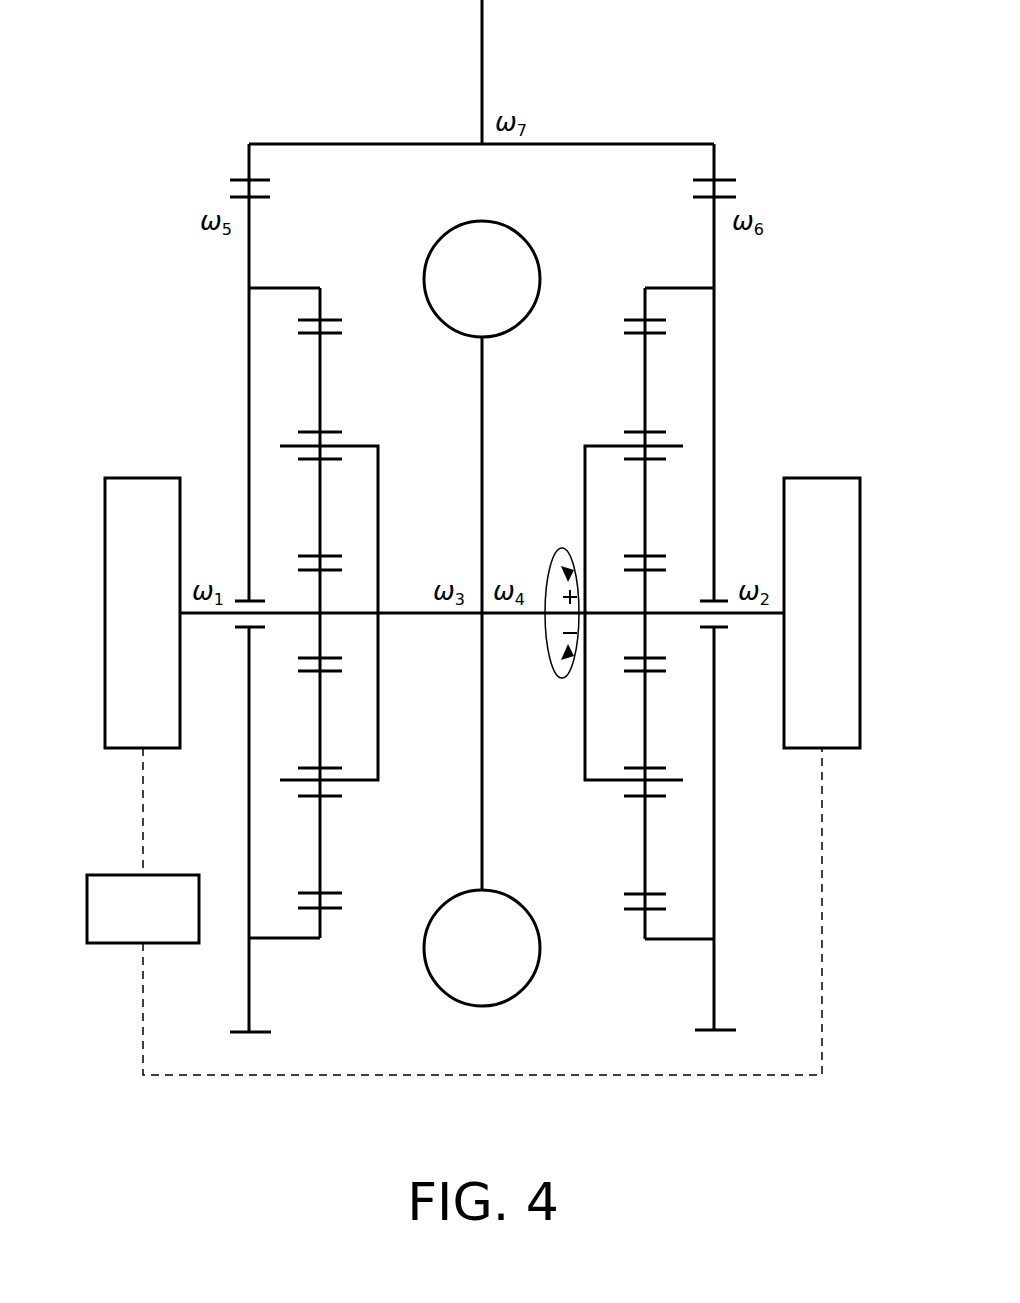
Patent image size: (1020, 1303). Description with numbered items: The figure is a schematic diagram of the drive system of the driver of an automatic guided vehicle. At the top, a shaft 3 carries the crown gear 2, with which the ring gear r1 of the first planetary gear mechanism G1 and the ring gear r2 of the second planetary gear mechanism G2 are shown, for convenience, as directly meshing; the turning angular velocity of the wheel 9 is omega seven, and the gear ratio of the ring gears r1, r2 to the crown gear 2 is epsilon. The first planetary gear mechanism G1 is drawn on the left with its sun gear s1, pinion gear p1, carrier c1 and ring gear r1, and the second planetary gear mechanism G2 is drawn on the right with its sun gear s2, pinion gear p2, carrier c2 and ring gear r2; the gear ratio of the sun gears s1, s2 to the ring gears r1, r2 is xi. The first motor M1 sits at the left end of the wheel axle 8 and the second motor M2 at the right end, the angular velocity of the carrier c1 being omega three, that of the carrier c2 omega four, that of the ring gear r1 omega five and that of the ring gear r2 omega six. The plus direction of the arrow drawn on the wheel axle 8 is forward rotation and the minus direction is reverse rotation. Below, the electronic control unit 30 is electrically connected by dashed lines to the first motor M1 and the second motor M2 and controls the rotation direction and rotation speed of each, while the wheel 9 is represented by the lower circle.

The crown gear 2 is at (640, 147).
The input shaft 3 is at (484, 52).
The wheel axle 8 is at (418, 617).
The wheel 9 is at (512, 892).
The electronic control unit (ECU) 30 is at (180, 873).
The first motor M1 is at (147, 477).
The second motor M2 is at (822, 477).
The first planetary gear mechanism G1 is at (405, 413).
The second planetary gear mechanism G2 is at (558, 413).
The ring gear r1 is at (248, 368).
The first pinion gear p1 is at (322, 375).
The carrier c1 is at (380, 497).
The sun gear s1 is at (320, 593).
The ring gear r2 is at (716, 368).
The second pinion gear p2 is at (643, 372).
The carrier c2 is at (583, 500).
The sun gear s2 is at (645, 594).